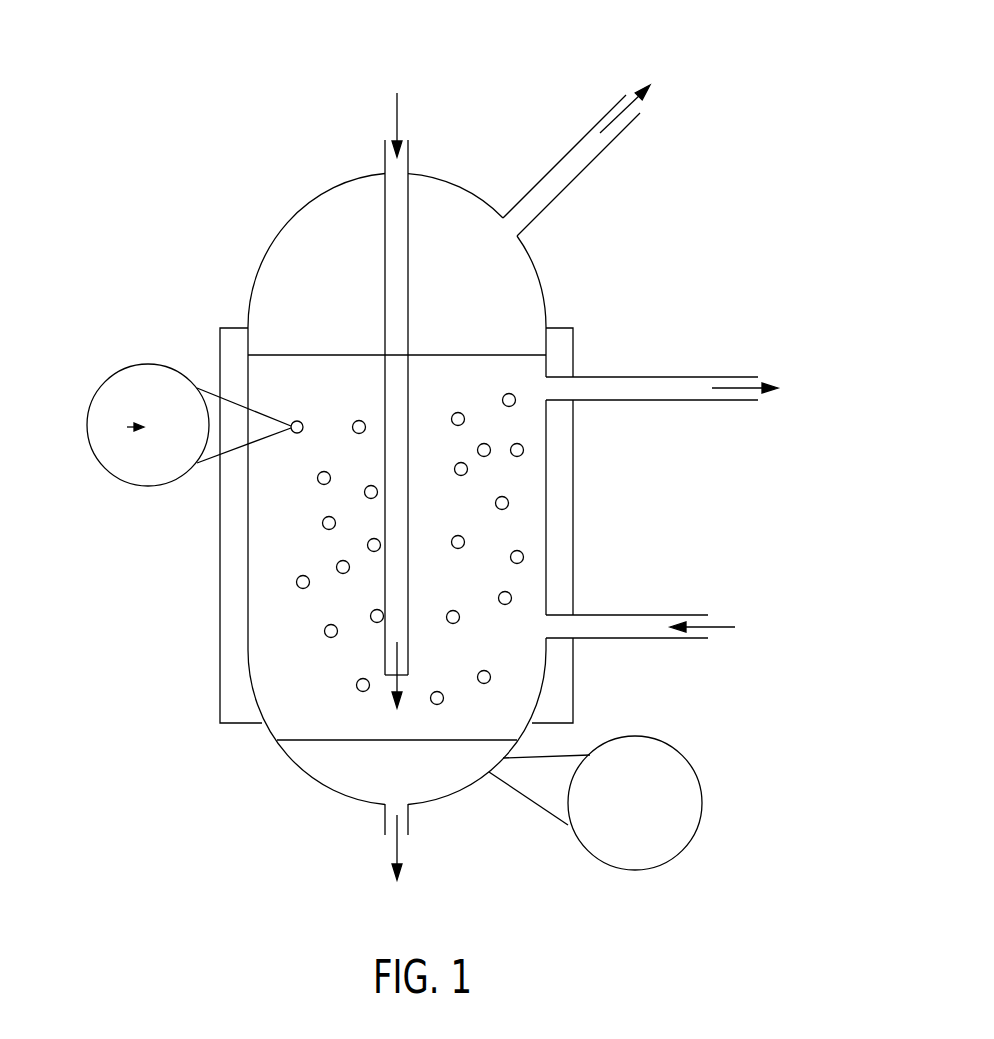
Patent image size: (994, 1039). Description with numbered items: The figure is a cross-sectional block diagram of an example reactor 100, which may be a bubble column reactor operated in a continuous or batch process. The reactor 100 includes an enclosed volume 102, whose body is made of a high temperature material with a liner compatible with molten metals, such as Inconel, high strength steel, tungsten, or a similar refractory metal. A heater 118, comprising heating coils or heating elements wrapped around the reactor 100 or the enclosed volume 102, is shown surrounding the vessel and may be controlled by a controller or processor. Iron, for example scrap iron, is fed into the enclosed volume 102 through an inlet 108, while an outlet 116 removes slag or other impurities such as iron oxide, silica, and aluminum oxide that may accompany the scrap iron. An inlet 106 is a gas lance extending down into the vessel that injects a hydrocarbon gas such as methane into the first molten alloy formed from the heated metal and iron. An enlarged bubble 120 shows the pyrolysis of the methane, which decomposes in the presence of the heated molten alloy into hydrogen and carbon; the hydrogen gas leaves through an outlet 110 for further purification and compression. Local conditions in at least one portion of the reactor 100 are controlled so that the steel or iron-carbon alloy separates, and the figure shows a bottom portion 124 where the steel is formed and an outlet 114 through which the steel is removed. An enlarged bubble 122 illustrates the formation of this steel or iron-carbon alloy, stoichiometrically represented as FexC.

The reactor 100 is at (190, 80).
The enclosed volume 102 is at (480, 290).
The inlet 106 is at (408, 158).
The inlet 108 is at (603, 614).
The outlet 110 is at (582, 170).
The outlet 114 is at (409, 822).
The outlet 116 is at (603, 376).
The heater 118 is at (243, 327).
The enlarged bubble 120 is at (152, 488).
The enlarged bubble 122 is at (636, 738).
The bottom portion 124 is at (410, 784).